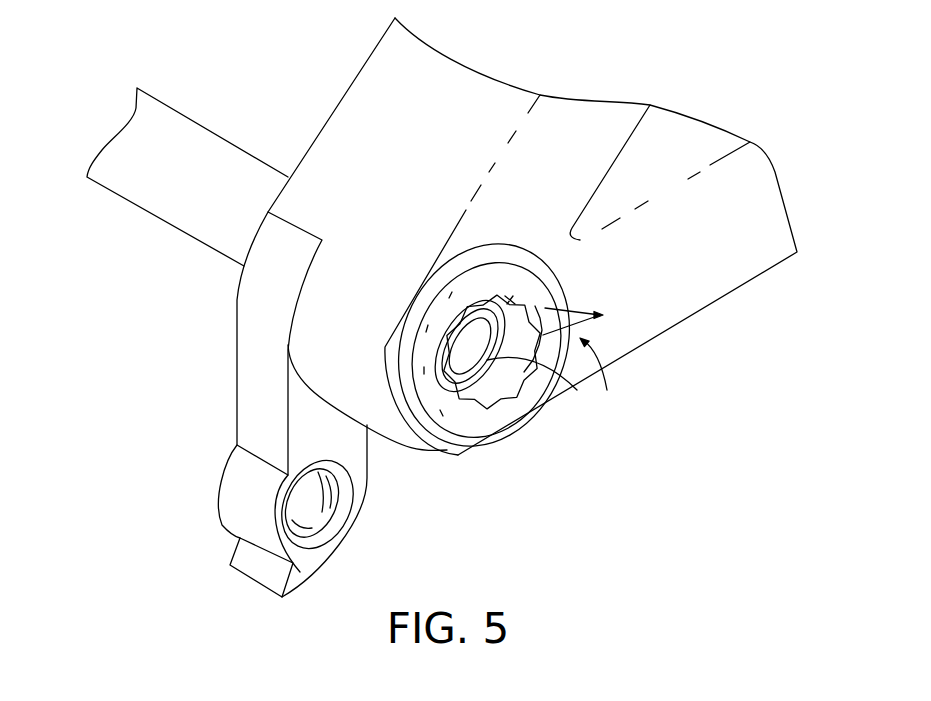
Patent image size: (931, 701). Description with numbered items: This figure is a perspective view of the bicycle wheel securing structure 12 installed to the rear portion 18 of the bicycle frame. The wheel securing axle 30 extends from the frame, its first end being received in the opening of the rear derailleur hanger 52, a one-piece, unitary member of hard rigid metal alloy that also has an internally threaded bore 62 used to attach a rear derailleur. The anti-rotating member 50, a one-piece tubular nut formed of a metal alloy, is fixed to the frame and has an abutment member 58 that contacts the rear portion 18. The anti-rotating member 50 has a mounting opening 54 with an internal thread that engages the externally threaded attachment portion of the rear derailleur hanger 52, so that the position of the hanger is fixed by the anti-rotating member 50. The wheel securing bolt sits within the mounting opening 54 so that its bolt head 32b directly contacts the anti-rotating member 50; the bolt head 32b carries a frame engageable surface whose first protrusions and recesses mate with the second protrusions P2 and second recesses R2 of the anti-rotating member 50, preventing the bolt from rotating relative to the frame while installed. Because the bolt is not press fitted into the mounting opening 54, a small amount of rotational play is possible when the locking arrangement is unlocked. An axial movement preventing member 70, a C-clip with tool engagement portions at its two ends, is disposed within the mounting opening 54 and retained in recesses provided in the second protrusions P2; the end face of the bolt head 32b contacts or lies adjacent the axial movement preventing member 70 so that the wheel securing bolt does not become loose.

The bicycle wheel securing structure 12 is at (605, 376).
The rear portion 18 is at (718, 302).
The wheel securing axle 30 is at (214, 124).
The bolt head 32b is at (514, 299).
The anti-rotating member 50 is at (473, 448).
The rear derailleur hanger 52 is at (228, 379).
The mounting opening 54 is at (486, 410).
The abutment member 58 is at (488, 252).
The internally threaded bore 62 is at (332, 490).
The axial movement preventing member 70 is at (528, 356).
The second protrusion P2 is at (589, 319).
The second recess R2 is at (540, 391).